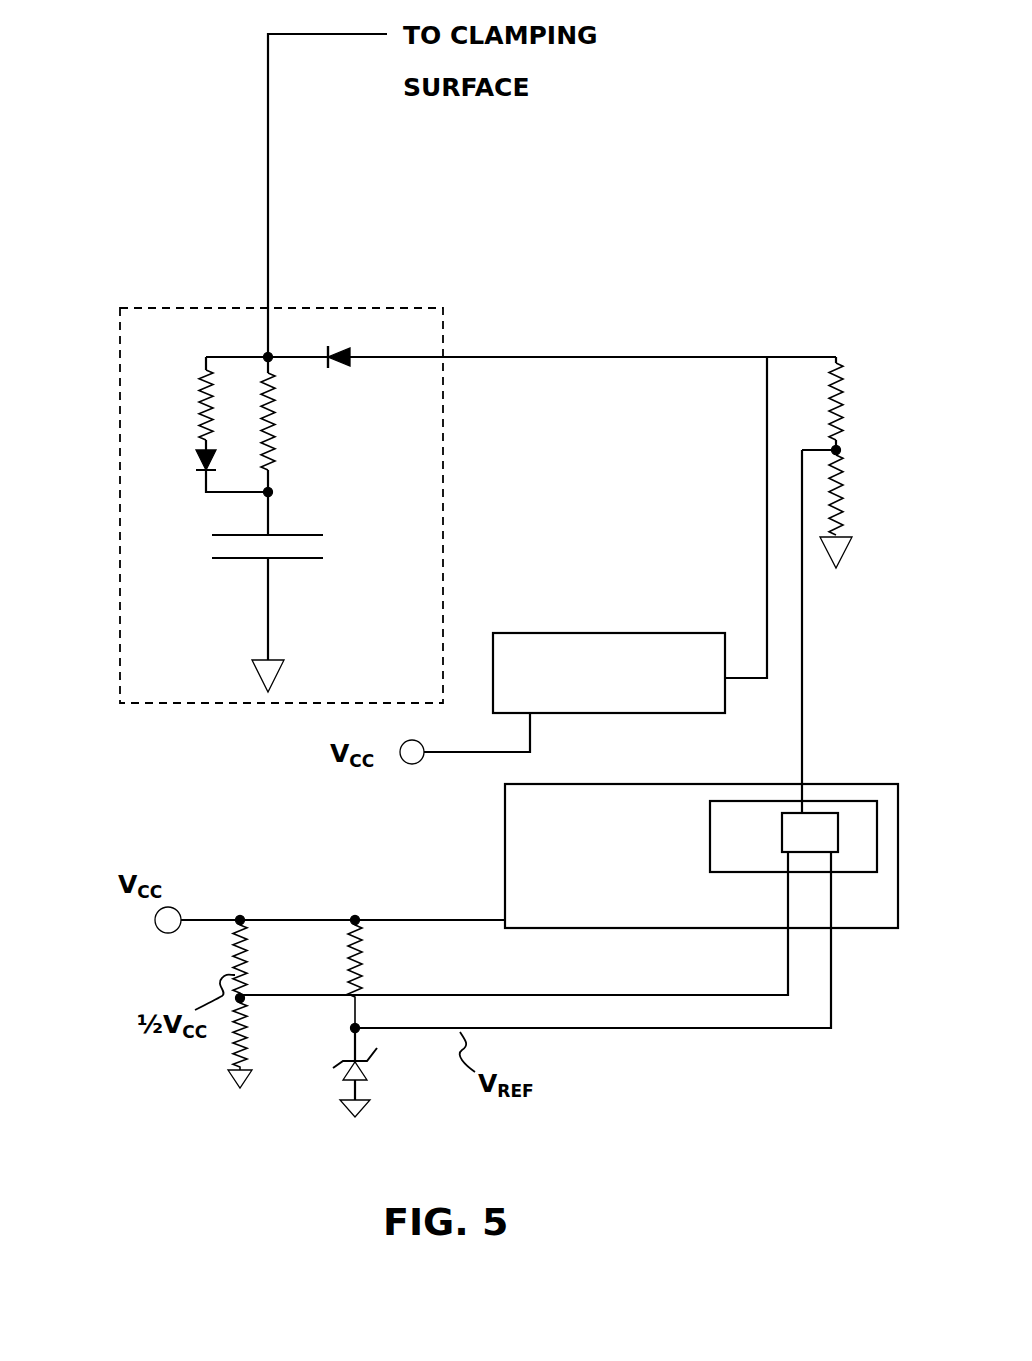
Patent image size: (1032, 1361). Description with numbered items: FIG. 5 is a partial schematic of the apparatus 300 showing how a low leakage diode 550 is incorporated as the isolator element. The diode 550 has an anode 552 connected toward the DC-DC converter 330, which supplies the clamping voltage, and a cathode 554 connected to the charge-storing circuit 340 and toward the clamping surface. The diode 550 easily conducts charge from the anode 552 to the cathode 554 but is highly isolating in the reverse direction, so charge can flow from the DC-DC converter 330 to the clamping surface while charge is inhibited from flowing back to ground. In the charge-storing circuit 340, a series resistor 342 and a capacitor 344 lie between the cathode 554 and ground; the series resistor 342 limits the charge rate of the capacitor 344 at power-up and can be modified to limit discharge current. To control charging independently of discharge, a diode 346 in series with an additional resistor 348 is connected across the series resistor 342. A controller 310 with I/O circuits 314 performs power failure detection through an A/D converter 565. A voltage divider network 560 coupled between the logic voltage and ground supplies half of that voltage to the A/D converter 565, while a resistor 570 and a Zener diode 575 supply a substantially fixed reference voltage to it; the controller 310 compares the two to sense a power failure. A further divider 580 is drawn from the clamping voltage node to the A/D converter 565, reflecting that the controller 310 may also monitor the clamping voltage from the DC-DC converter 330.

The apparatus 300 is at (185, 308).
The controller 310 is at (505, 870).
The I/O circuits 314 is at (710, 828).
The DC-DC converter 330 is at (596, 633).
The charge-storing circuit 340 is at (328, 590).
The series resistor 342 is at (276, 470).
The capacitor 344 is at (238, 560).
The diode 346 is at (216, 480).
The additional resistor 348 is at (199, 405).
The low leakage diode 550 is at (362, 320).
The anode 552 is at (352, 362).
The cathode 554 is at (326, 368).
The voltage divider network 560 is at (195, 958).
The A/D converter 565 is at (838, 817).
The resistor 570 is at (365, 966).
The Zener diode 575 is at (345, 1077).
The voltage divider resistor 580 is at (858, 397).